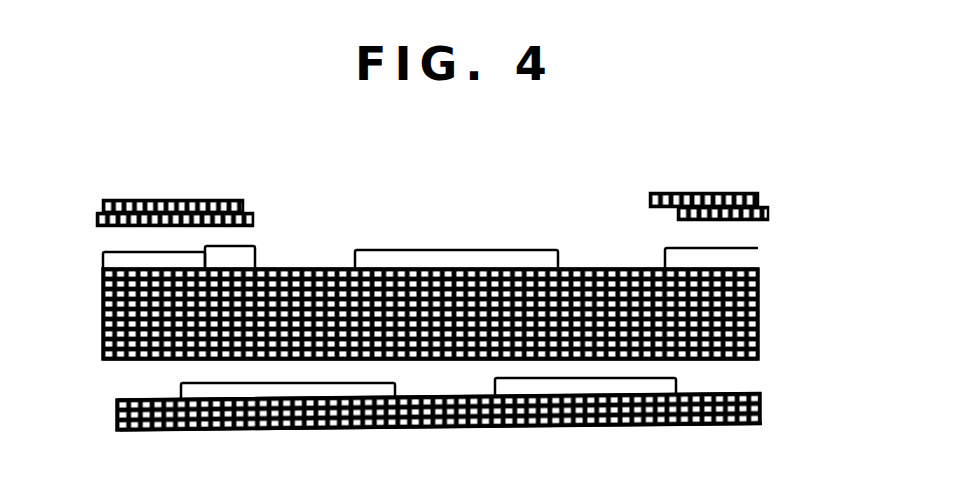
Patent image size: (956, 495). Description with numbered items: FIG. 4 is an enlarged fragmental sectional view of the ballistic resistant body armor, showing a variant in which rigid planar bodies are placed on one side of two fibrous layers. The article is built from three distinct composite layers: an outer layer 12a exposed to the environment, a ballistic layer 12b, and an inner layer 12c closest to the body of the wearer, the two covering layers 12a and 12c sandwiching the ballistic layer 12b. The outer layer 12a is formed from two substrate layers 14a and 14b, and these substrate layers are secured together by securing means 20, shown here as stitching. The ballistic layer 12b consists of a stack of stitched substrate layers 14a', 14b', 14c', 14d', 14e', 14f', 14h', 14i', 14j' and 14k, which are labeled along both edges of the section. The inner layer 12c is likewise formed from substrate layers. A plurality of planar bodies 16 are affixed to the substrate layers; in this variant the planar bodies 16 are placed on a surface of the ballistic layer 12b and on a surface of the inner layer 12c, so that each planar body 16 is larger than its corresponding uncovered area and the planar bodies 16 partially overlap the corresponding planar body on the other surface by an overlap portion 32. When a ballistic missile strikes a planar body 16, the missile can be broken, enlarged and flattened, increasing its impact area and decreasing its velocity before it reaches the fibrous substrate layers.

The outer composite layer 12a is at (105, 212).
The ballistic layer 12b is at (452, 290).
The inner composite layer 12c is at (490, 422).
The substrate layer 14a is at (740, 192).
The substrate layer 14b is at (755, 209).
The substrate layer 14a' is at (464, 263).
The substrate layer 14b' is at (399, 256).
The substrate layer 14c' is at (463, 283).
The substrate layer 14d' is at (403, 277).
The substrate layer 14e' is at (464, 303).
The substrate layer 14f' is at (400, 300).
The substrate layer 14h' is at (465, 323).
The substrate layer 14i' is at (403, 321).
The substrate layer 14j' is at (463, 343).
The substrate layer 14k is at (103, 357).
The planar body 16 is at (420, 250).
The vertical securing means 20 is at (735, 184).
The overlap portion 32 is at (205, 247).